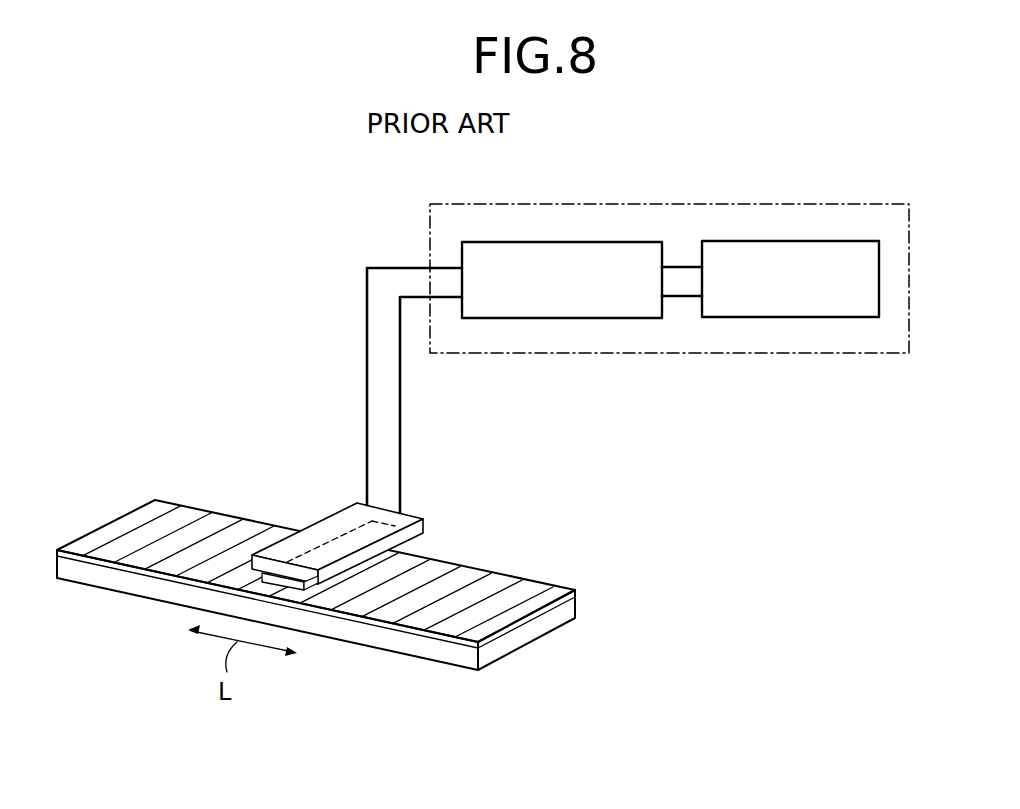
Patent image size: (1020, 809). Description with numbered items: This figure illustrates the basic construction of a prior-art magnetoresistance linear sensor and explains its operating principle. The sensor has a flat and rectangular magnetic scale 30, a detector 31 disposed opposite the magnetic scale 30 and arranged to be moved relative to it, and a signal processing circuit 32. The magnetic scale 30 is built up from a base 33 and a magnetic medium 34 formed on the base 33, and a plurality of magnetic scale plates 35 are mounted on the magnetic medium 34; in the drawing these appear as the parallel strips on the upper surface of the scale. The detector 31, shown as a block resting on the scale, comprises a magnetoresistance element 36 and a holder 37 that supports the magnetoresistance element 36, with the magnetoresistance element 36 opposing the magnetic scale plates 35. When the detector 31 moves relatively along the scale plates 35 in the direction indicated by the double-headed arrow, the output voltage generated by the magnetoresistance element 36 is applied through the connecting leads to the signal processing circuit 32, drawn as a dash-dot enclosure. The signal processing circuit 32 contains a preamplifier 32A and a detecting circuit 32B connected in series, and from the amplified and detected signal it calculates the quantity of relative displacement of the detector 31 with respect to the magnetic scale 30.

The magnetic scale 30 is at (112, 596).
The detector 31 is at (326, 514).
The signal processing circuit 32 is at (684, 204).
The preamplifier 32A is at (610, 320).
The detecting circuit 32B is at (775, 318).
The base 33 is at (535, 635).
The magnetic medium 34 is at (571, 592).
The magnetic scale plates 35 is at (127, 525).
The magnetoresistance element 36 is at (288, 588).
The holder 37 is at (424, 518).